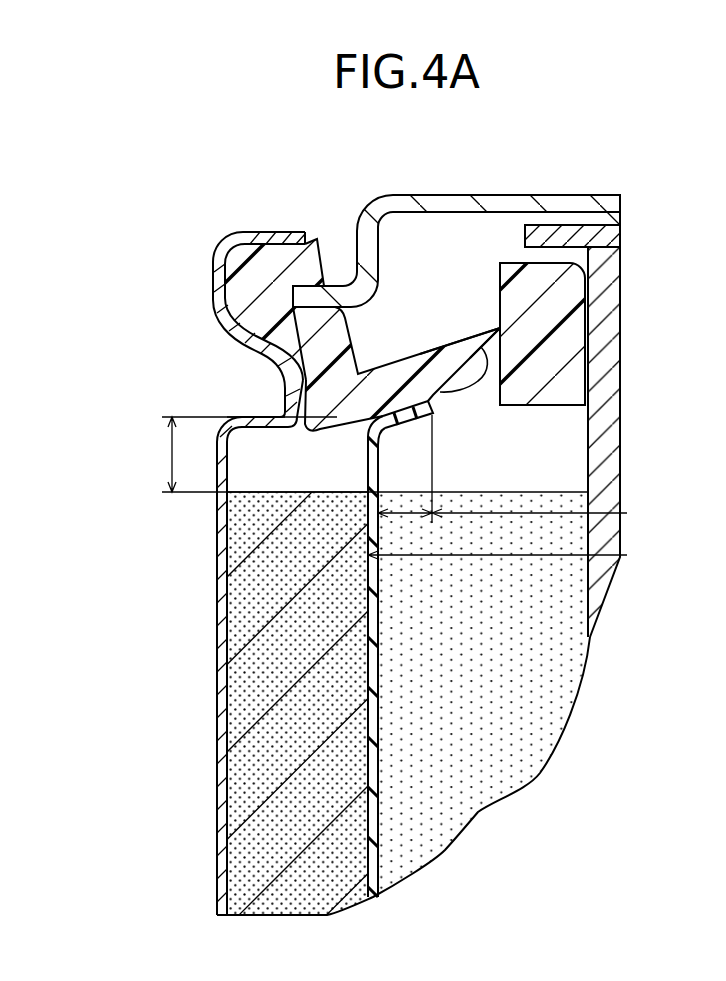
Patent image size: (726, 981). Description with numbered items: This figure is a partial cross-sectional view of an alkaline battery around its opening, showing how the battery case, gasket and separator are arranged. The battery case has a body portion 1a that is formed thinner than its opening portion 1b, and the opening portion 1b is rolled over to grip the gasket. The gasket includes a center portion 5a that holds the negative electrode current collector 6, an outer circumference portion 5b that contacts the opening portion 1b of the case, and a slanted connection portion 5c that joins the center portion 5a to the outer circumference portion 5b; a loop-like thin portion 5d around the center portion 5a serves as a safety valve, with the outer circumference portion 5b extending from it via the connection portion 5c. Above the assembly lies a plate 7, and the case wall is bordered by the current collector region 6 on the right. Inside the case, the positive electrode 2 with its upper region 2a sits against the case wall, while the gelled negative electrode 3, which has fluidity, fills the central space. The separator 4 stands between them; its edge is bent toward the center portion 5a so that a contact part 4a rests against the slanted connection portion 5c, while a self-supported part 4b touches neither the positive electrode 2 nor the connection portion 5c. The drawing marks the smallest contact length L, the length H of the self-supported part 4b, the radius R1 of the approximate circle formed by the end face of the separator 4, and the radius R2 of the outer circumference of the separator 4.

The body portion of the battery case 1a is at (222, 727).
The opening portion of the battery case 1b is at (272, 231).
The positive electrode 2 is at (237, 633).
The upper portion of sealing member 2a is at (265, 491).
The gelled negative electrode 3 is at (527, 760).
The separator 4 is at (382, 649).
The contact part 4a is at (394, 418).
The self-supported part 4b is at (368, 460).
The center portion 5a is at (546, 405).
The outer circumference portion 5b is at (237, 299).
The connection portion 5c is at (441, 390).
The loop-like thin portion 5d is at (498, 327).
The negative electrode current collector 6 is at (621, 393).
The top plate 7 is at (500, 194).
The length of the self-supported part H is at (364, 454).
The smallest length of the contact part L is at (410, 482).
The radius of approximate circle formed by end face of the separator R1 is at (529, 531).
The radius of outer circumference of the separator R2 is at (497, 572).